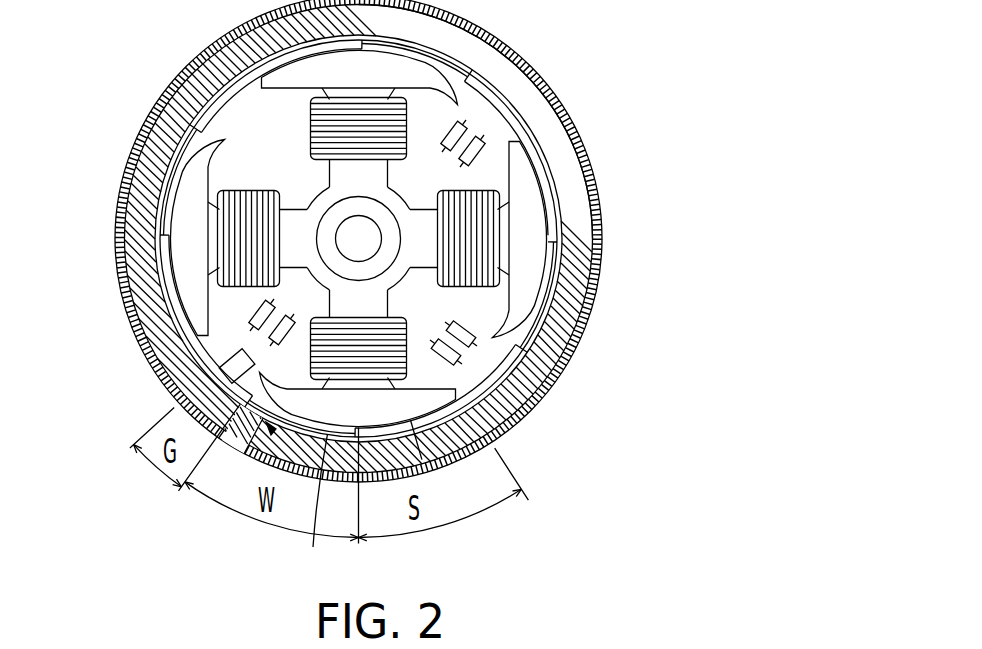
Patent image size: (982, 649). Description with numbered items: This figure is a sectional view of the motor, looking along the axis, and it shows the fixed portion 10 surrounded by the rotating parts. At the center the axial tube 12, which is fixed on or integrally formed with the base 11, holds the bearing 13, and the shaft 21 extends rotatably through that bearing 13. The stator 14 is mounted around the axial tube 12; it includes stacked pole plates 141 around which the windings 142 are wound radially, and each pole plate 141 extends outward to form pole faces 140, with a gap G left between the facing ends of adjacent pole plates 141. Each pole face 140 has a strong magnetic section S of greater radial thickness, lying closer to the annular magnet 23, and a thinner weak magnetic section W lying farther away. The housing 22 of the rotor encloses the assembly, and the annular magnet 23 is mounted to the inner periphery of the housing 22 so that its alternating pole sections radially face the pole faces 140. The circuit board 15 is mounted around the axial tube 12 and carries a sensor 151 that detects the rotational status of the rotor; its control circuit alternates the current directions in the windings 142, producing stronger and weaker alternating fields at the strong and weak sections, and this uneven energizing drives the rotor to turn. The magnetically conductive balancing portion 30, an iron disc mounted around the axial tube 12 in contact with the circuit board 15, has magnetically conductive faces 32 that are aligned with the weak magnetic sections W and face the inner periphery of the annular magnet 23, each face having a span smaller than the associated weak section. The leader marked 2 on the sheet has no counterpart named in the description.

The stator 2 is at (303, 213).
The shaft 21 is at (358, 238).
The housing 22 is at (181, 83).
The annular magnet 23 is at (213, 62).
The fixed portion 10 is at (459, 289).
The base 11 is at (527, 407).
The circuit board 15 is at (358, 241).
The axial tube 12 is at (548, 370).
The bearing 13 is at (398, 275).
The stator 14 is at (454, 238).
The pole plate 141 is at (392, 248).
The winding 142 is at (538, 313).
The pole face 140 is at (422, 460).
The sensor 151 is at (219, 366).
The magnetically conductive balancing portion 30 is at (241, 457).
The magnetically conductive face 32 is at (312, 510).